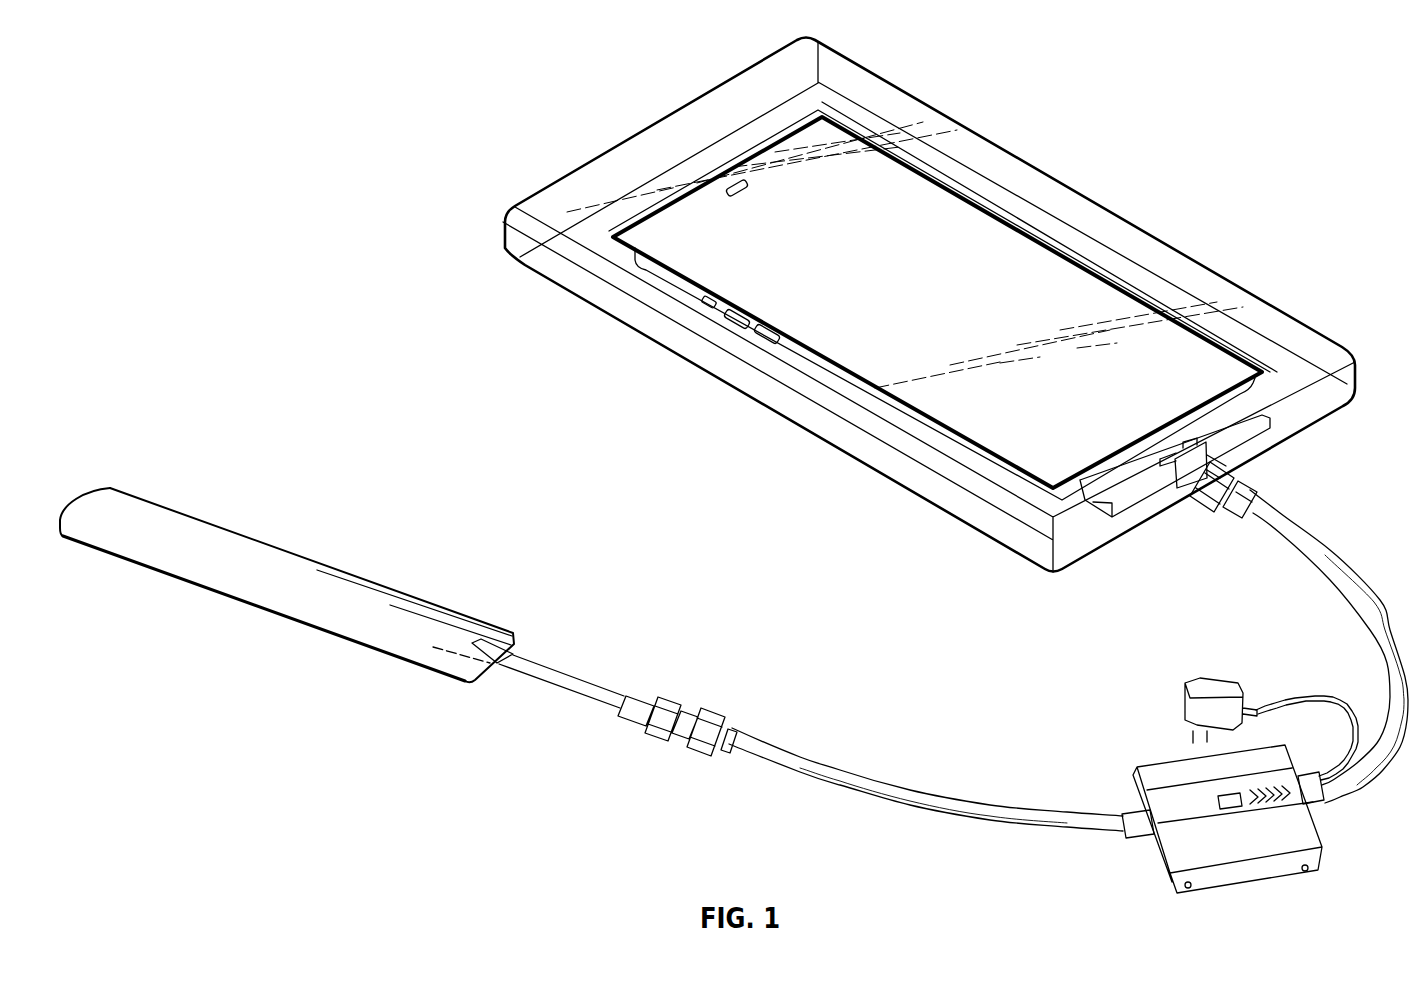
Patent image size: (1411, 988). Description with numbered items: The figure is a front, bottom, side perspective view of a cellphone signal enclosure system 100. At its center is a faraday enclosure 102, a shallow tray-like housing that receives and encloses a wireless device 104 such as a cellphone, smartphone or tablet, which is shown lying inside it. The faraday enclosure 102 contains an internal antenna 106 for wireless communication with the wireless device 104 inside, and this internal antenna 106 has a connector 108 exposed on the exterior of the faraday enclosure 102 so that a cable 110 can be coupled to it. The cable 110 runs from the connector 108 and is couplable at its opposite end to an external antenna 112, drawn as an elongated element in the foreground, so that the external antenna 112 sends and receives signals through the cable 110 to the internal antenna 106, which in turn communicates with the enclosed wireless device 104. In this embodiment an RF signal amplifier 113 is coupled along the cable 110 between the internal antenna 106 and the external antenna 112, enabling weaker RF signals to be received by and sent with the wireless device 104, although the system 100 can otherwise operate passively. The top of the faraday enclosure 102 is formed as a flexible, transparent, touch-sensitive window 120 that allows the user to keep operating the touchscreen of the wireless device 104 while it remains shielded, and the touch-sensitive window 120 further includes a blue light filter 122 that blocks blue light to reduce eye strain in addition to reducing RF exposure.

The cellphone signal enclosure system 100 is at (468, 42).
The faraday enclosure 102 is at (681, 126).
The wireless device 104 is at (922, 301).
The internal antenna 106 is at (1140, 483).
The connector 108 is at (1250, 484).
The cable 110 is at (1040, 815).
The external antenna 112 is at (330, 620).
The RF signal amplifier 113 is at (1247, 838).
The touch-sensitive window 120 is at (1120, 287).
The blue light filter 122 is at (1186, 352).